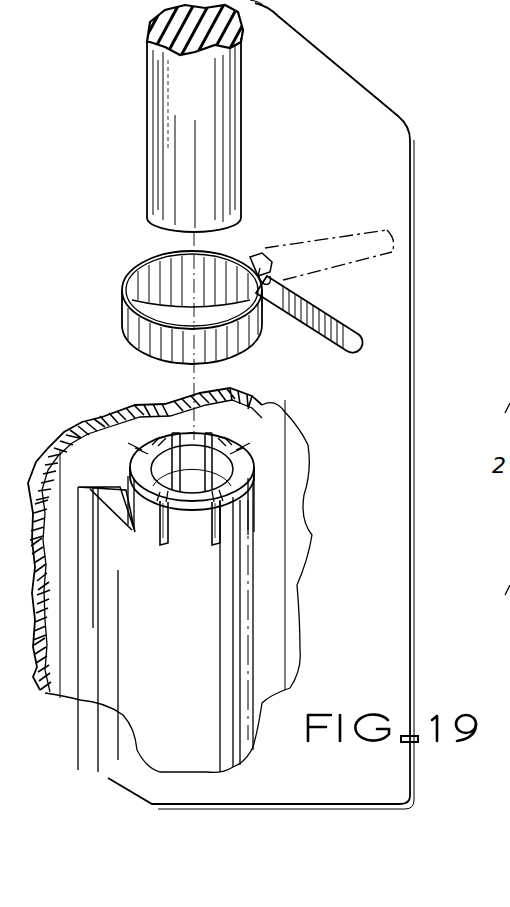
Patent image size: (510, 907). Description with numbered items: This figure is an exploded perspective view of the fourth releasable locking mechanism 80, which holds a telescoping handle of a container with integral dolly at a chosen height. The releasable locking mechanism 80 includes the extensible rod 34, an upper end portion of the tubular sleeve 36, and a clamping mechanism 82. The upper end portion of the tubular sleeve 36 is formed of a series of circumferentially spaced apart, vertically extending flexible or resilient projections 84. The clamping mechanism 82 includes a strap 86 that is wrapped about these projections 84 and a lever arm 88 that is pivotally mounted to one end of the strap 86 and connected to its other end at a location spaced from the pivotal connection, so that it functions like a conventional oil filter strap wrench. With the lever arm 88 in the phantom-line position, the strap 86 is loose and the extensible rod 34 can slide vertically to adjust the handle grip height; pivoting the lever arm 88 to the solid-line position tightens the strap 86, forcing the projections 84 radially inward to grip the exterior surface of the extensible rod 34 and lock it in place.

The extensible rod 34 is at (241, 120).
The tubular sleeve 36 is at (153, 698).
The fourth releasable locking mechanism 80 is at (318, 182).
The clamping mechanism 82 is at (100, 128).
The vertically extending flexible or resilient projections 84 is at (130, 506).
The strap 86 is at (124, 286).
The lever arm 88 is at (308, 335).